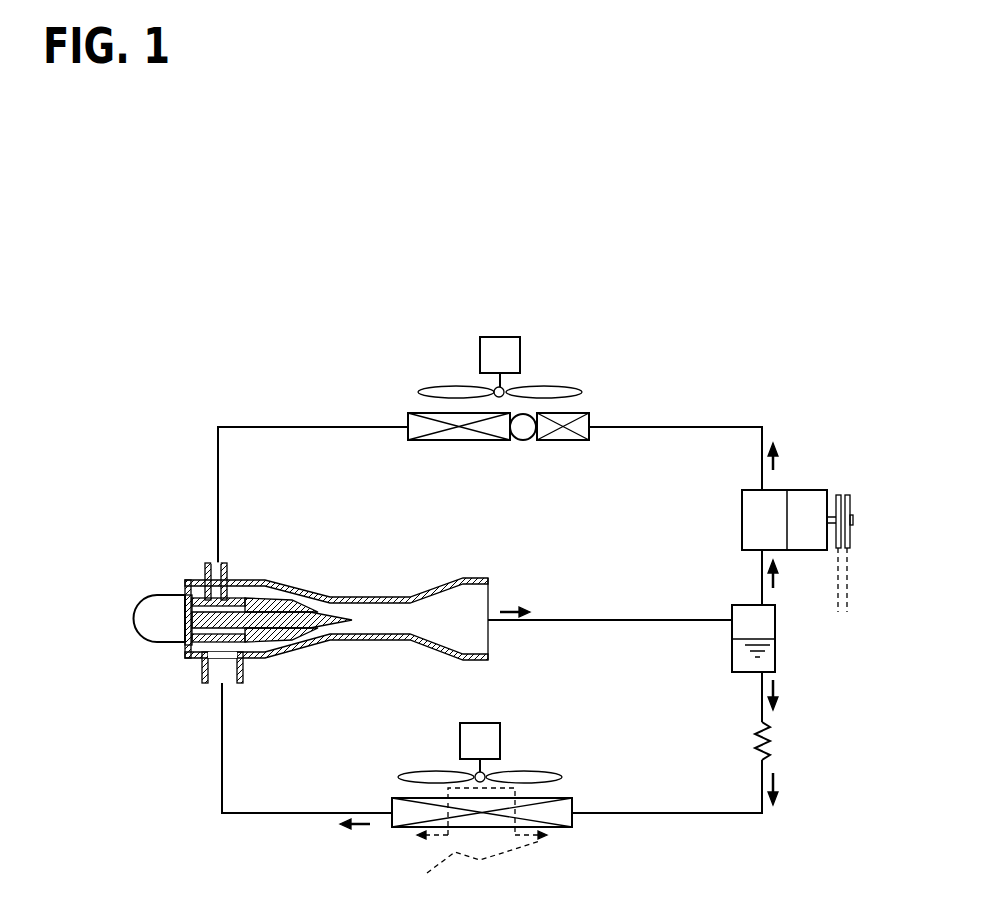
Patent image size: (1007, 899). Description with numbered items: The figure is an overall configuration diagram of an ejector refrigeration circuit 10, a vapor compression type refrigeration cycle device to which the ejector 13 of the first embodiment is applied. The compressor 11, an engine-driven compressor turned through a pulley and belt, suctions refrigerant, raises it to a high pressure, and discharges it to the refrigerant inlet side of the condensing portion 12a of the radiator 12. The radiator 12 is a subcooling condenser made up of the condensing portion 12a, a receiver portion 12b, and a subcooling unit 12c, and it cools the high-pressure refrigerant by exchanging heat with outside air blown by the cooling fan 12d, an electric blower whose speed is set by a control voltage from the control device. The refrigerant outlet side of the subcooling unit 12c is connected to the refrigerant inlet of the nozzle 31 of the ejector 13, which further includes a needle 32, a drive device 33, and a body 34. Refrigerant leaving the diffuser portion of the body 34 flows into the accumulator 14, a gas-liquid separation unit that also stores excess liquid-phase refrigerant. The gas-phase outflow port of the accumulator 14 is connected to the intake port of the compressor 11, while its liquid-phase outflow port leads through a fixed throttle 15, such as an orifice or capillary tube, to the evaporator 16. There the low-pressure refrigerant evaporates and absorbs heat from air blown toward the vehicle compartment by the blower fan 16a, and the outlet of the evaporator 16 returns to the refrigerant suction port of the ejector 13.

The ejector refrigeration circuit 10 is at (711, 386).
The compressor 11 is at (808, 490).
The radiator 12 is at (479, 417).
The condensing portion 12a is at (443, 441).
The receiver portion 12b is at (523, 441).
The subcooling unit 12c is at (578, 441).
The cooling fan 12d is at (520, 352).
The ejector 13 is at (336, 612).
The accumulator 14 is at (775, 650).
The fixed throttle 15 is at (770, 738).
The evaporator 16 is at (514, 811).
The blower fan 16a is at (500, 741).
The nozzle 31 is at (253, 596).
The needle 32 is at (306, 600).
The drive device 33 is at (160, 595).
The body 34 is at (367, 639).